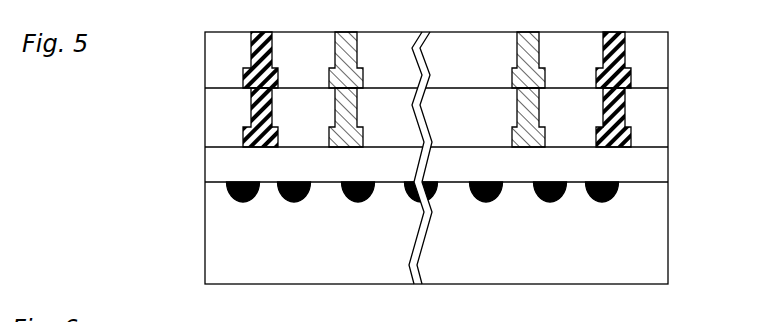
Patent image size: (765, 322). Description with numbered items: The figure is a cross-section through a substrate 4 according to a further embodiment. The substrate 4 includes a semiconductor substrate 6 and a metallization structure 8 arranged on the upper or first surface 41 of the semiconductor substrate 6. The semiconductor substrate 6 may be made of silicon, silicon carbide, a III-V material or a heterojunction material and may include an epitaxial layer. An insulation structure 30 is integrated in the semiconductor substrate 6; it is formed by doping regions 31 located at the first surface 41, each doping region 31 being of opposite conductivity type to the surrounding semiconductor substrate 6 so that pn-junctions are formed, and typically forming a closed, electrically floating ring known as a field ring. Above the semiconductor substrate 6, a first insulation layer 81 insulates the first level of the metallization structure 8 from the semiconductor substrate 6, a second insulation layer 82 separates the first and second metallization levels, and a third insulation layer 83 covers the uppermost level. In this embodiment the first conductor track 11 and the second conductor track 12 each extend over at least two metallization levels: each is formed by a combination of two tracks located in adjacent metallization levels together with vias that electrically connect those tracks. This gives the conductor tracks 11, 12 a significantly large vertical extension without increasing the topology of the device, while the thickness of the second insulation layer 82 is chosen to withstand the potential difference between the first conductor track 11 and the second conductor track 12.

The substrate 4 is at (690, 38).
The semiconductor substrate 6 is at (205, 271).
The metallization structure 8 is at (160, 32).
The first conductor track 11 is at (251, 58).
The second conductor track 12 is at (329, 141).
The insulation structure 30 is at (216, 199).
The doping region 31 is at (244, 203).
The first surface 41 is at (653, 181).
The first insulation layer 81 is at (207, 169).
The second insulation layer 82 is at (205, 128).
The third insulation layer 83 is at (205, 72).